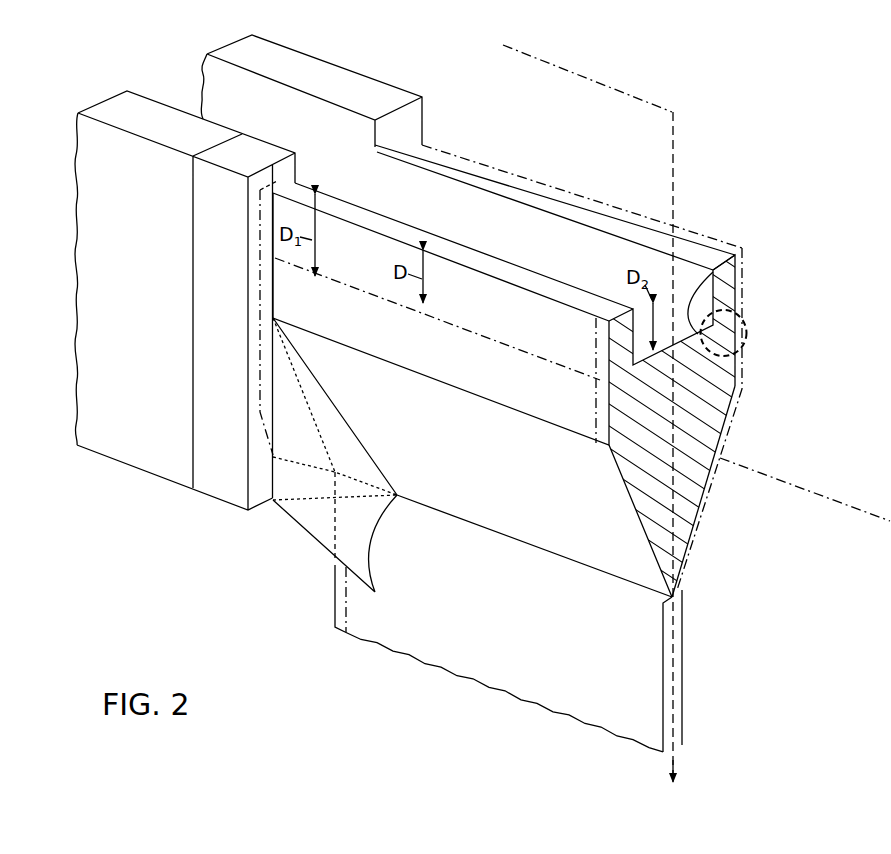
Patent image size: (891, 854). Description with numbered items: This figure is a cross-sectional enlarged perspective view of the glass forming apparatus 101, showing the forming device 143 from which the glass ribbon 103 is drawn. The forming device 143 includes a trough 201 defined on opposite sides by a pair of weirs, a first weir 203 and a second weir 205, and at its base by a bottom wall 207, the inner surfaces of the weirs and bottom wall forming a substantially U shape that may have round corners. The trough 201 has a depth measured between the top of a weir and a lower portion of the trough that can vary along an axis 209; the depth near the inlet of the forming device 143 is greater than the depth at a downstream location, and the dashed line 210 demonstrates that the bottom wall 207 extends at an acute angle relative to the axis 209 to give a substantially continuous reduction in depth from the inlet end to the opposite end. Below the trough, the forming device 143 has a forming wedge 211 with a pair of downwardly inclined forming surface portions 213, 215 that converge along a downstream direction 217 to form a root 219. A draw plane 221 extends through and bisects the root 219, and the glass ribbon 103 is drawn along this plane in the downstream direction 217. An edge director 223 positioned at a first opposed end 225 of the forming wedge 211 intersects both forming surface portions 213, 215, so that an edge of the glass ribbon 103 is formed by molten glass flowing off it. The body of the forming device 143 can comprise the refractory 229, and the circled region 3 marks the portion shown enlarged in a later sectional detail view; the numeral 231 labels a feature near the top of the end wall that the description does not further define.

The glass forming apparatus 101 is at (633, 73).
The glass ribbon 103 is at (508, 612).
The forming device 143 is at (680, 416).
The trough 201 is at (497, 300).
The first weir 203 is at (441, 309).
The second weir 205 is at (582, 182).
The bottom wall 207 is at (705, 267).
The axis 209 is at (805, 486).
The dashed line 210 is at (437, 313).
The forming wedge 211 is at (760, 521).
The first downwardly inclined forming surface portion 213 is at (472, 457).
The second downwardly inclined forming surface portion 215 is at (727, 491).
The downstream direction 217 is at (703, 764).
The root 219 is at (534, 552).
The draw plane 221 is at (704, 443).
The edge director 223 is at (335, 449).
The first opposed end 225 is at (185, 300).
The refractory 229 is at (732, 419).
The top of end wall 231 is at (749, 265).
The sectional detail region 3 is at (753, 333).